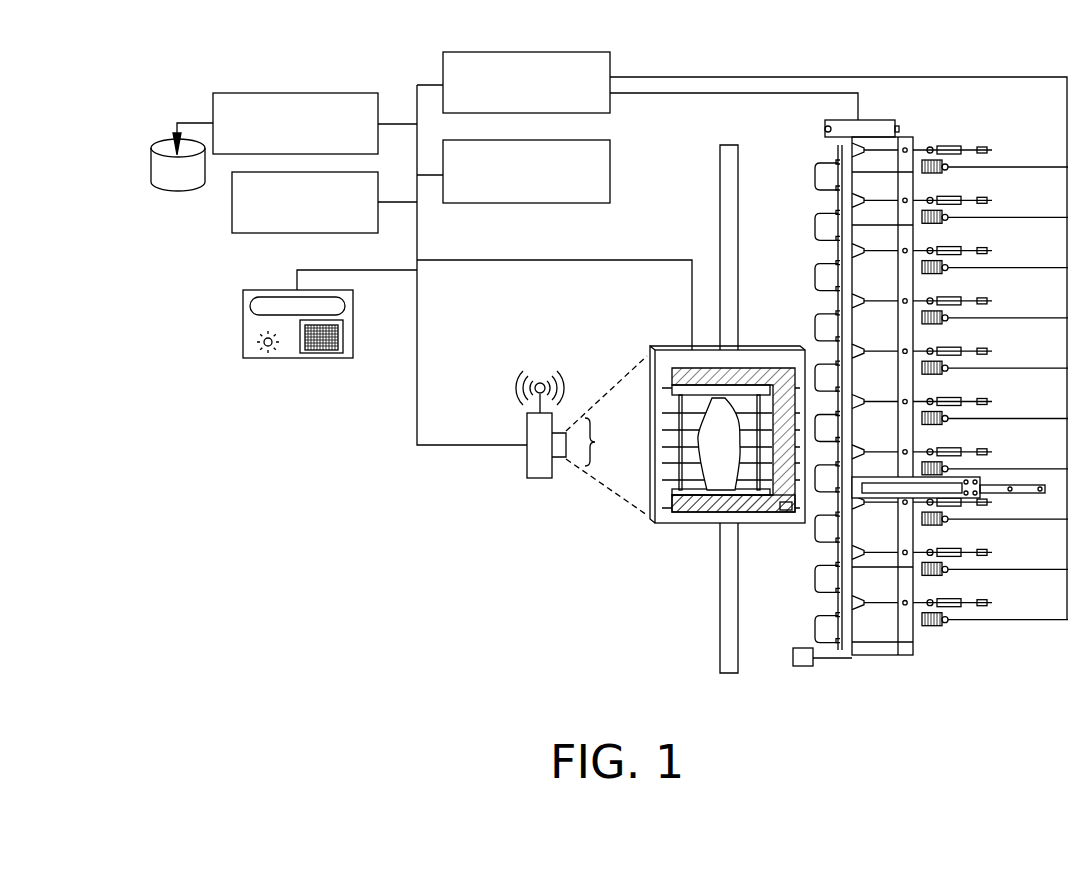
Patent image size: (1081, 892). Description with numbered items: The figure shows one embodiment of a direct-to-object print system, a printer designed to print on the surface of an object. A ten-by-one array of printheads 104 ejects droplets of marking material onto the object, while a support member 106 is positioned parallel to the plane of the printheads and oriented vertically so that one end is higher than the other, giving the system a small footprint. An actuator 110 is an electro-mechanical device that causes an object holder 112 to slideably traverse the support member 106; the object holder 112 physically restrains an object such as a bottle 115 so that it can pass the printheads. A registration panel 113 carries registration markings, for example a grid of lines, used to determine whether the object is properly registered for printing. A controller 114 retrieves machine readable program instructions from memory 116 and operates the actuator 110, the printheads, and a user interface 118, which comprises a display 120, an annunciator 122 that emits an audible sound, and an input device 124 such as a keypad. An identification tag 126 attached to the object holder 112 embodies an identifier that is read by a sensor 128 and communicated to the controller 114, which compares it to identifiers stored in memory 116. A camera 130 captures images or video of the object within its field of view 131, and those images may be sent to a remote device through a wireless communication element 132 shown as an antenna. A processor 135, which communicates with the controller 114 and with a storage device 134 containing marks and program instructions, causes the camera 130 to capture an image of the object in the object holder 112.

The array of printheads 104 is at (798, 240).
The support member 106 is at (720, 643).
The actuator 110 is at (611, 172).
The object holder 112 is at (690, 526).
The registration panel 113 is at (704, 429).
The controller 114 is at (611, 69).
The bottle 115 is at (710, 447).
The memory 116 is at (231, 209).
The user interface 118 is at (266, 359).
The display 120 is at (248, 308).
The annunciator 122 is at (263, 346).
The input device 124 is at (328, 356).
The identification tag 126 is at (896, 120).
The sensor 128 is at (800, 668).
The camera 130 is at (555, 454).
The field of view 131 is at (606, 435).
The wireless communication element 132 is at (538, 399).
The storage device 134 is at (149, 171).
The processor 135 is at (298, 92).